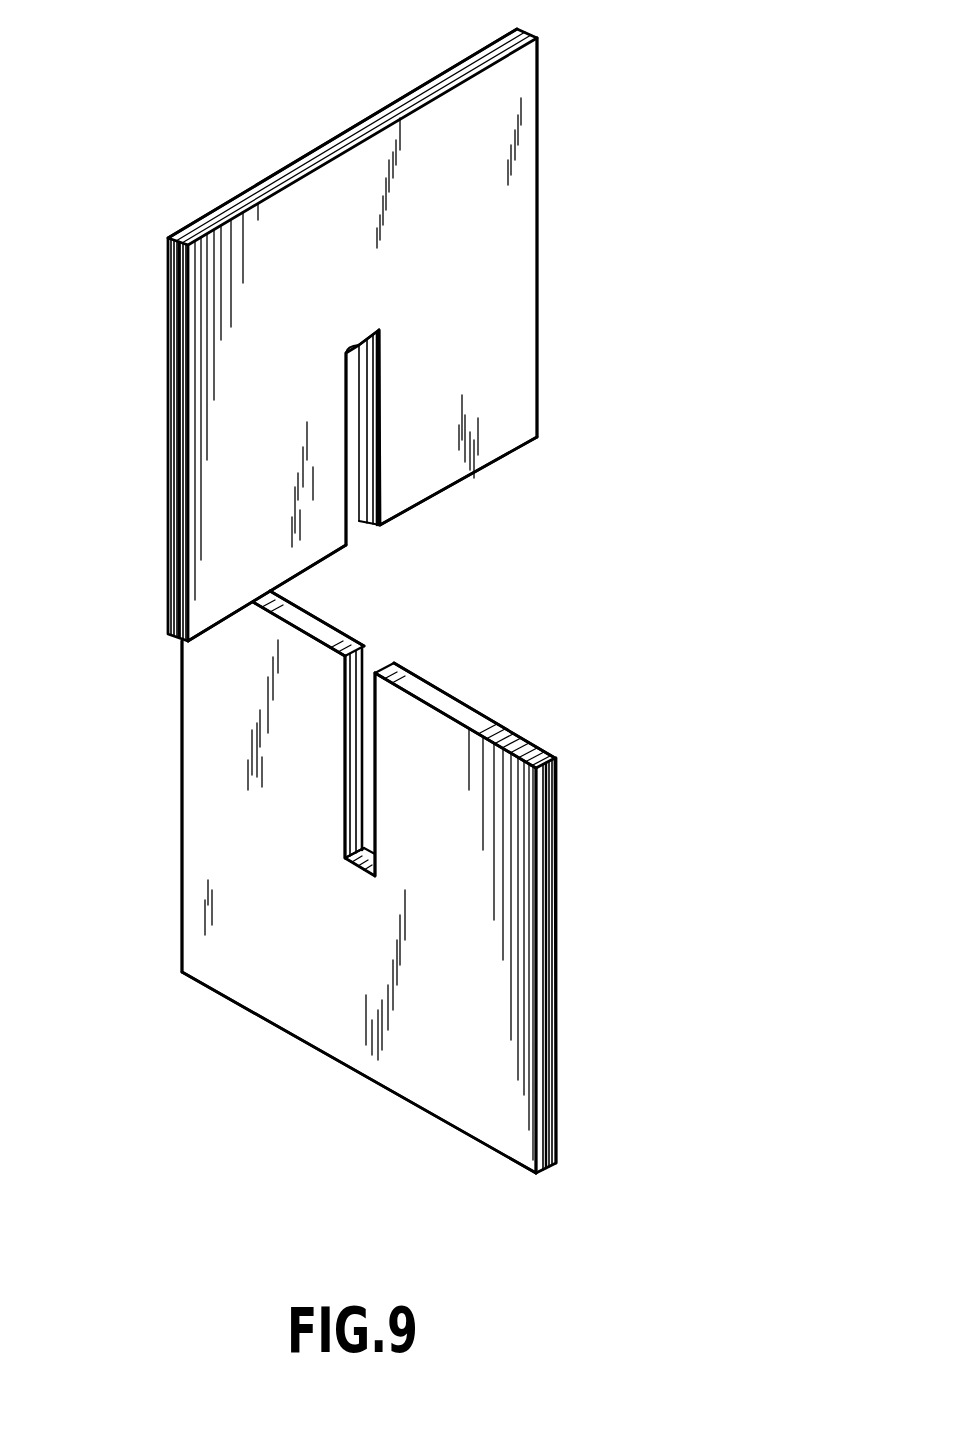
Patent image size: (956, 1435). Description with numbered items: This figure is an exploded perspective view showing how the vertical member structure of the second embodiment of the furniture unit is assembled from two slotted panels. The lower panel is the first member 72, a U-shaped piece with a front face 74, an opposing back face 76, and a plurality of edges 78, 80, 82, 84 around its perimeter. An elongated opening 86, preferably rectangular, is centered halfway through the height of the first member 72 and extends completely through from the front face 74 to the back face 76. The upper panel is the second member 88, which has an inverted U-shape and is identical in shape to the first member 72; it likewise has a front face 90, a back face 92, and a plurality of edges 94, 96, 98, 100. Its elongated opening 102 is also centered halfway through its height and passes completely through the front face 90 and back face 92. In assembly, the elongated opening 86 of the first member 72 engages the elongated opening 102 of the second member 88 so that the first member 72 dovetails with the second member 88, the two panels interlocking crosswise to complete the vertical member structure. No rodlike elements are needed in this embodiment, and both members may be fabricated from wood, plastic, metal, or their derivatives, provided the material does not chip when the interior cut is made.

The first member 72 is at (169, 657).
The front face 74 is at (215, 905).
The back face 76 is at (552, 1080).
The edge 78 is at (180, 796).
The edge 80 is at (393, 1095).
The edge 82 is at (540, 932).
The edge 84 is at (465, 725).
The elongated opening 86 is at (378, 665).
The second member 88 is at (156, 228).
The front face 90 is at (213, 497).
The back face 92 is at (540, 362).
The edge 94 is at (168, 373).
The edge 96 is at (364, 118).
The edge 98 is at (537, 240).
The edge 100 is at (445, 487).
The elongated opening 102 is at (362, 532).